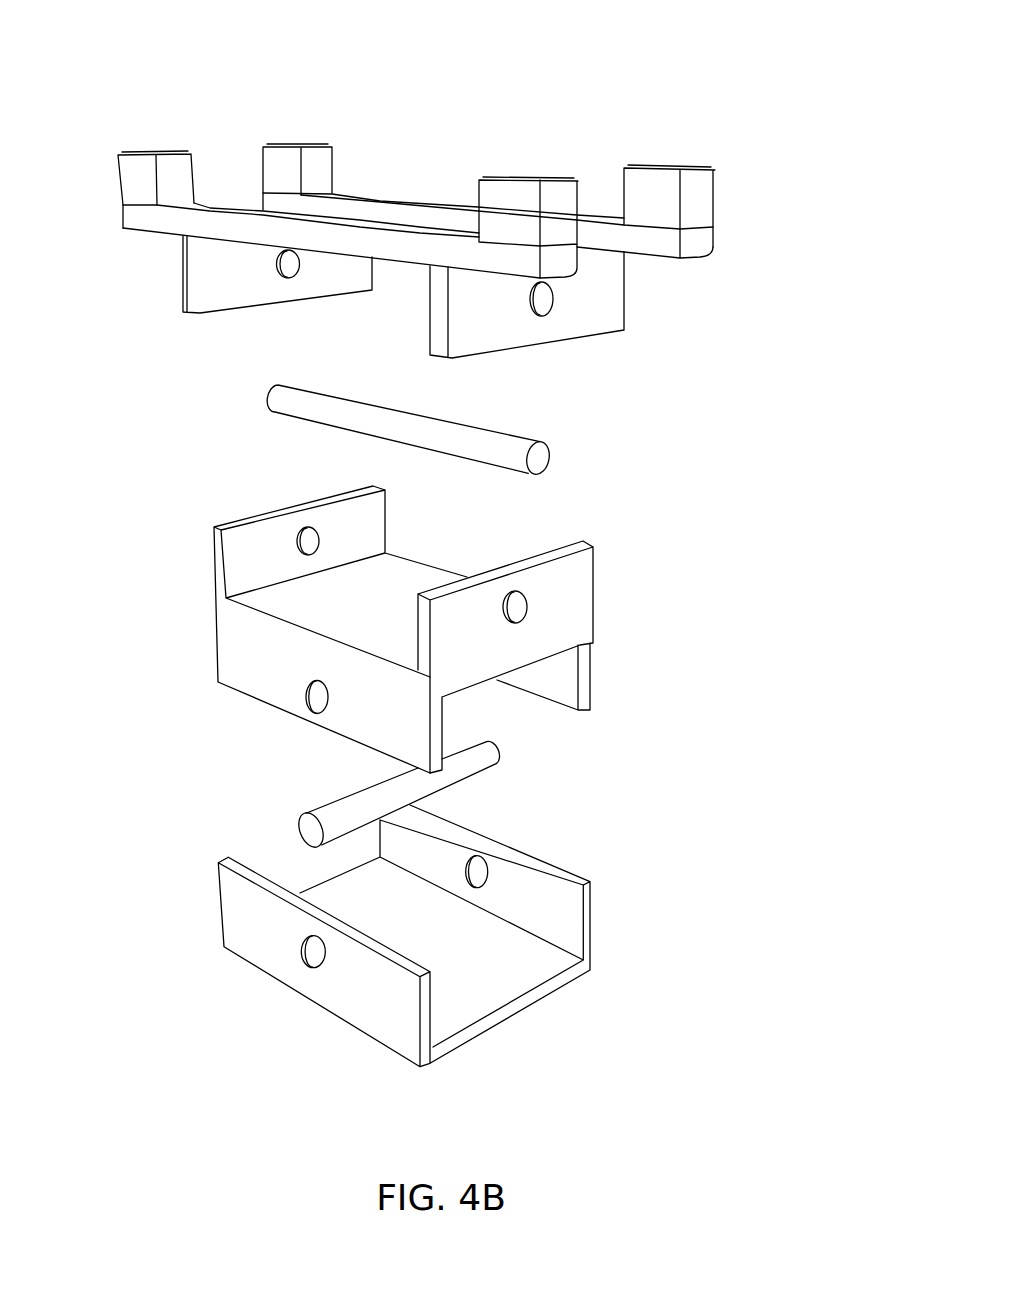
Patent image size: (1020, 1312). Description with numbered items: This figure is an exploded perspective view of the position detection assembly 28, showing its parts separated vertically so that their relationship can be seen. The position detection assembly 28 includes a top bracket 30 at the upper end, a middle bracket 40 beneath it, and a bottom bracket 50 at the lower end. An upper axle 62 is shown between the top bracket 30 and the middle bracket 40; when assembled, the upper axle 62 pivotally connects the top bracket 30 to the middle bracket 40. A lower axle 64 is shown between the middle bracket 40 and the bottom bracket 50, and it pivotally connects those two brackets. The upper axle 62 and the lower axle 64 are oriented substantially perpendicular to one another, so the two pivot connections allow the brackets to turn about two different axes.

The position detection assembly 28 is at (798, 103).
The top bracket 30 is at (300, 110).
The middle bracket 40 is at (628, 607).
The bottom bracket 50 is at (245, 995).
The upper axle 62 is at (517, 434).
The lower axle 64 is at (300, 828).